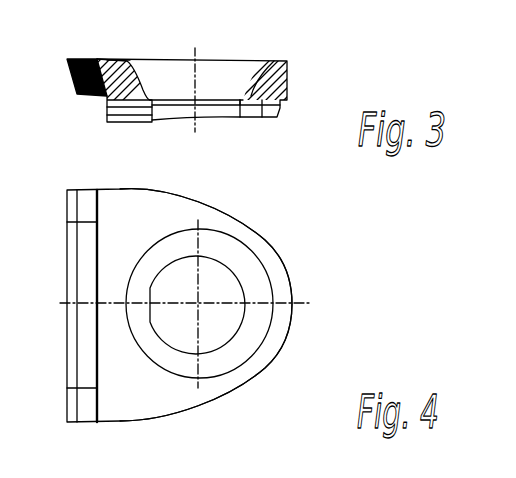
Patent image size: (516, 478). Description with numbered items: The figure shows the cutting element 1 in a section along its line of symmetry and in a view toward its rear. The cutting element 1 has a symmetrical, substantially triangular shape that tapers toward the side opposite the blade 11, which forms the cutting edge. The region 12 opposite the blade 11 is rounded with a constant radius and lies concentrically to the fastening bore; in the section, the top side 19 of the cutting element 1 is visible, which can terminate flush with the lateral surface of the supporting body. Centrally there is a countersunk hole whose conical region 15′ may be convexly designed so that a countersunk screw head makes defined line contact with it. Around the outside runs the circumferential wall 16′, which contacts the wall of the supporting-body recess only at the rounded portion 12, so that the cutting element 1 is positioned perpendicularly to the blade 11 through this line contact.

In FIG. 3, the cutting element 1 is at (287, 78).
In FIG. 4, the cutting element 1 is at (145, 207).
In FIG. 3, the blade 11 is at (66, 58).
In FIG. 4, the blade 11 is at (74, 188).
In FIG. 3, the top side 19 is at (118, 59).
In FIG. 3, the conical region 15′ is at (223, 74).
In FIG. 4, the conical region 15′ is at (227, 288).
In FIG. 4, the circumferential wall 16′ is at (229, 213).
In FIG. 4, the region opposite the blade 12 is at (297, 303).